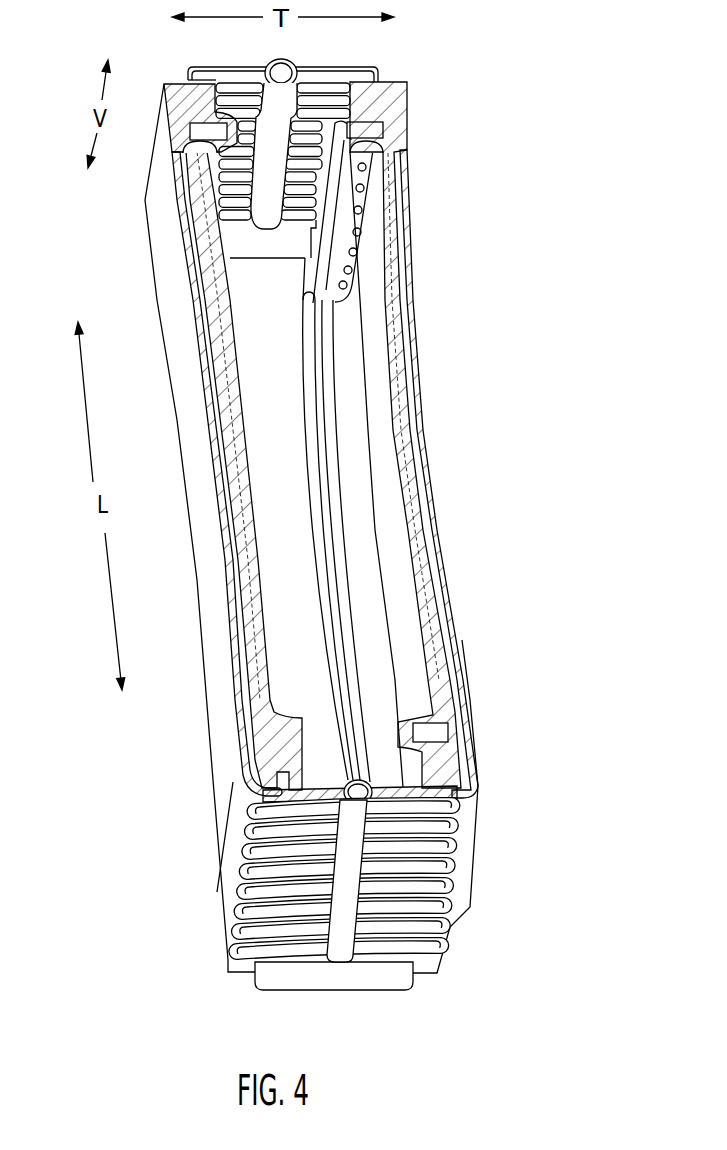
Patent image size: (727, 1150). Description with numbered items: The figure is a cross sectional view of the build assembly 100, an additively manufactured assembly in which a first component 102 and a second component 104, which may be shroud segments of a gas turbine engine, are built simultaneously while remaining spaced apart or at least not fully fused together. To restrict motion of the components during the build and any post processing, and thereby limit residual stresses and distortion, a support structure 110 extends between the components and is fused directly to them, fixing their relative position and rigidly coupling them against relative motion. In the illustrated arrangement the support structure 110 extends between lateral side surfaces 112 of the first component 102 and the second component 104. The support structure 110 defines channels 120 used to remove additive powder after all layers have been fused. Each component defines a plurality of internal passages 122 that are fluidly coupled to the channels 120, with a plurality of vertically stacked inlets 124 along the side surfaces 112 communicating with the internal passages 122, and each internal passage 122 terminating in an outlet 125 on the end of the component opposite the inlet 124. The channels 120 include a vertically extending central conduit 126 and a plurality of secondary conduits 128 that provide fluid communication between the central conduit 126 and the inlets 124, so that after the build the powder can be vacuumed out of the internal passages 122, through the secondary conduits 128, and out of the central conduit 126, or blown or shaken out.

The build assembly 100 is at (518, 67).
The first component 102 is at (203, 443).
The second component 104 is at (427, 464).
The support structure 110 is at (378, 1010).
The lateral side surface 112 is at (232, 878).
The channel 120 is at (362, 776).
The internal passage 122 is at (443, 610).
The inlet 124 is at (478, 763).
The outlet 125 is at (217, 165).
The central conduit 126 is at (344, 930).
The secondary conduit 128 is at (450, 830).